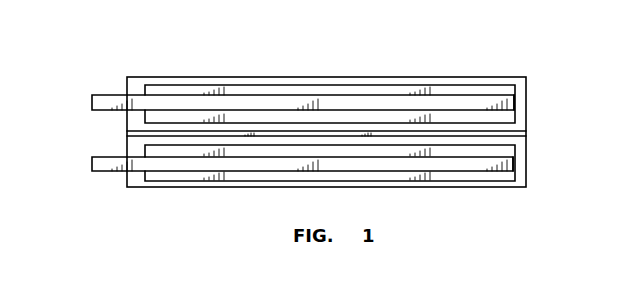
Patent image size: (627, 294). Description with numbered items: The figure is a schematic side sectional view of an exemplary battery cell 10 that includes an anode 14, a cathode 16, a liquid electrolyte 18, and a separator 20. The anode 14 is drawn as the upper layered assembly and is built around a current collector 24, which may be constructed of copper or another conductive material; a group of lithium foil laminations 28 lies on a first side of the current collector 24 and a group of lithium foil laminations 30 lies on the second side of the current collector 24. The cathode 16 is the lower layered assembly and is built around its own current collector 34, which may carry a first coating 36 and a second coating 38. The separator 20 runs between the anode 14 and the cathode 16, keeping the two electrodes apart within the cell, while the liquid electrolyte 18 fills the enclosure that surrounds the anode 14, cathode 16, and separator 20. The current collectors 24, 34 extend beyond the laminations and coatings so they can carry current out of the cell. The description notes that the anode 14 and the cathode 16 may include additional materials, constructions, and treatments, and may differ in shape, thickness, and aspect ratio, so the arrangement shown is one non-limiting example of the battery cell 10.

The battery cell 10 is at (328, 132).
The anode 14 is at (327, 77).
The cathode 16 is at (340, 191).
The liquid electrolyte 18 is at (520, 178).
The separator 20 is at (127, 133).
The current collector 24 is at (268, 95).
The group of lithium foil laminations 28 is at (323, 91).
The group of lithium foil laminations 30 is at (517, 117).
The current collector 34 is at (240, 166).
The first coating 36 is at (516, 149).
The second coating 38 is at (268, 178).